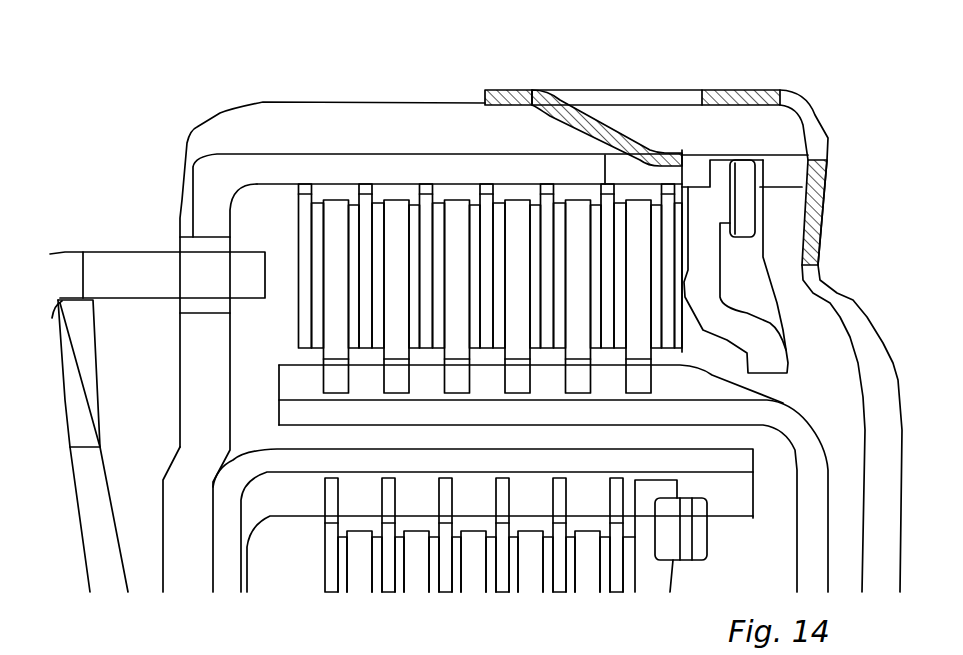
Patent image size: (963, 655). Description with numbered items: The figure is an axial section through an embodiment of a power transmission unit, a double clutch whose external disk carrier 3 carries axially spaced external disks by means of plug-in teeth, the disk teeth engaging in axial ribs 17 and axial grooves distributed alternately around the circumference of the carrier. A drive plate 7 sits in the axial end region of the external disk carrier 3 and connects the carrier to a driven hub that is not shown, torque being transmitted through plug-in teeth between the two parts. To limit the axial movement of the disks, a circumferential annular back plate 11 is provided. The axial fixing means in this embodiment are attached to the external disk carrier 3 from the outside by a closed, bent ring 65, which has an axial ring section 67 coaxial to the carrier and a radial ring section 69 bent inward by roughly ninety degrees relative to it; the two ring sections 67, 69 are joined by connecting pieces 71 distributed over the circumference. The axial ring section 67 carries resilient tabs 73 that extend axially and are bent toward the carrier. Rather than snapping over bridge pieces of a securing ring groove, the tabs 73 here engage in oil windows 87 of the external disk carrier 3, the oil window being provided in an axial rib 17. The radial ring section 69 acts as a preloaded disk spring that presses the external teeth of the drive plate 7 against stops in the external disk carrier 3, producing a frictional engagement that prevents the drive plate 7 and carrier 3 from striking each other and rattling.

The external disk carrier 3 is at (193, 163).
The drive plate 7 is at (835, 325).
The back plate 11 is at (725, 323).
The axial rib 17 is at (278, 174).
The bent ring 65 is at (708, 90).
The axial ring section 67 is at (555, 90).
The radial ring section 69 is at (816, 208).
The connecting piece 71 is at (818, 115).
The resilient tab 73 is at (607, 133).
The oil window 87 is at (633, 173).